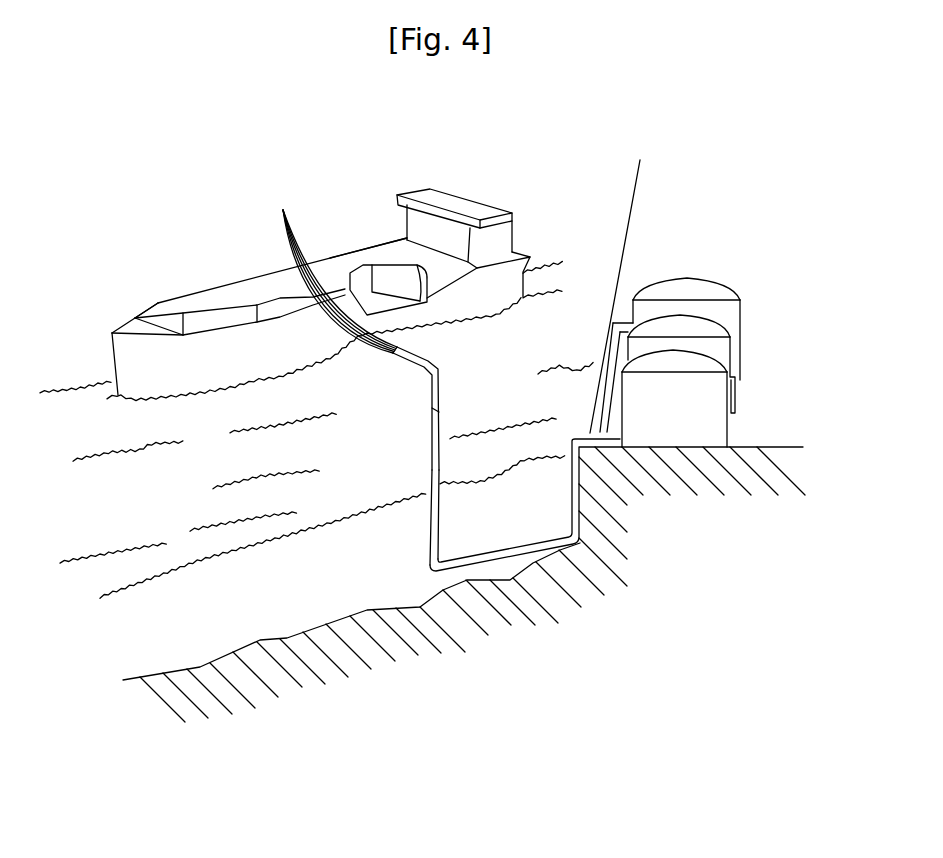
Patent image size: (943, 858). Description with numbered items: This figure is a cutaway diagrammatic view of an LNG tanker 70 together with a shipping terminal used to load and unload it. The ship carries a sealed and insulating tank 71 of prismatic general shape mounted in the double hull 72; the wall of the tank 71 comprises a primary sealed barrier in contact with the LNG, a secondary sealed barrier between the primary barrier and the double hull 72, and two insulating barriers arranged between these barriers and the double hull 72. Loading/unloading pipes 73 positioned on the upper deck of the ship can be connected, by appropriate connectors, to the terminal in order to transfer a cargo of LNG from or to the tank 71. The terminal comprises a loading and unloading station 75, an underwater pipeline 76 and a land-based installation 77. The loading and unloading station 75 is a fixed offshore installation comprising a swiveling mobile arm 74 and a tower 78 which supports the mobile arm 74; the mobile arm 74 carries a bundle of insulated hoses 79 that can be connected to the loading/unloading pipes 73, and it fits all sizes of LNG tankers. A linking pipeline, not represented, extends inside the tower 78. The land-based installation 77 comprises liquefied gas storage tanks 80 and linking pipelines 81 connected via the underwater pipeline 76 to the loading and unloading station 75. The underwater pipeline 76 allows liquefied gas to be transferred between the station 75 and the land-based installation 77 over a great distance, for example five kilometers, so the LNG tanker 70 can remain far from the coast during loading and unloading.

The LNG tanker 70 is at (468, 182).
The sealed and insulating tank 71 is at (386, 272).
The double hull 72 is at (474, 268).
The loading/unloading pipes 73 is at (285, 214).
The mobile arm 74 is at (452, 386).
The loading and unloading station 75 is at (418, 466).
The underwater pipeline 76 is at (507, 557).
The land-based installation 77 is at (705, 308).
The tower 78 is at (428, 537).
The bundle of insulated hoses 79 is at (387, 370).
The liquefied gas storage tanks 80 is at (658, 280).
The linking pipelines 81 is at (598, 418).